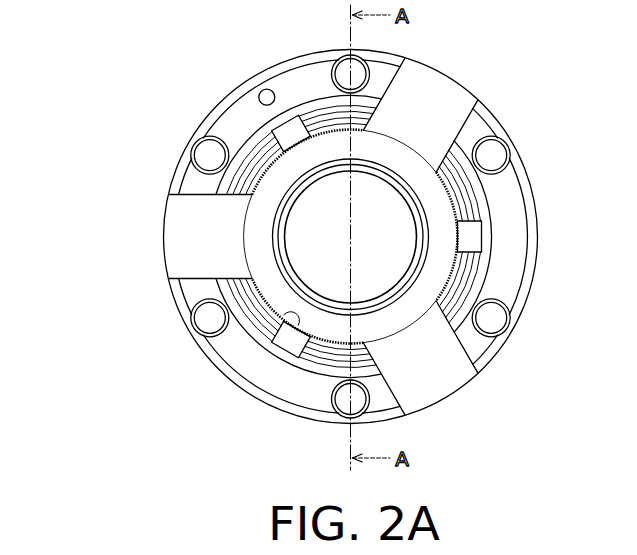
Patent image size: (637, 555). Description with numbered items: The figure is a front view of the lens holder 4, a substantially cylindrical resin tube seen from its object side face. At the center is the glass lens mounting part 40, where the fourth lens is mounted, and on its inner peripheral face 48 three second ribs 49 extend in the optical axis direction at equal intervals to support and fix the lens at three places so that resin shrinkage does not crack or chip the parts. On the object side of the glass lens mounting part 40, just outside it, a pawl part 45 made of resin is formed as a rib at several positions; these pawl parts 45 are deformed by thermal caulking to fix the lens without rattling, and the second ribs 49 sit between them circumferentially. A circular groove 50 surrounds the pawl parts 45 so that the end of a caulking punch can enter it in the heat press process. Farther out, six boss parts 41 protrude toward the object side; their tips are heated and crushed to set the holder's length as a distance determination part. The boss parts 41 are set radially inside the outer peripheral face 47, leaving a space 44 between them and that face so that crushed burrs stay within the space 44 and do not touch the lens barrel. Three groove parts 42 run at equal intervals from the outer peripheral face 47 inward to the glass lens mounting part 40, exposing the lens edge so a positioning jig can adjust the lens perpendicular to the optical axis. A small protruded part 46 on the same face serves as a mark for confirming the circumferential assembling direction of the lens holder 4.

The lens holder 4 is at (32, 83).
The glass lens mounting part 40 is at (258, 232).
The boss part 41 is at (200, 312).
The groove part 42 is at (183, 247).
The space 44 is at (228, 337).
The pawl part 45 is at (265, 317).
The protruded part 46 is at (262, 92).
The outer peripheral face 47 is at (163, 233).
The inner peripheral face 48 is at (250, 264).
The second rib 49 is at (283, 323).
The circular groove 50 is at (245, 145).